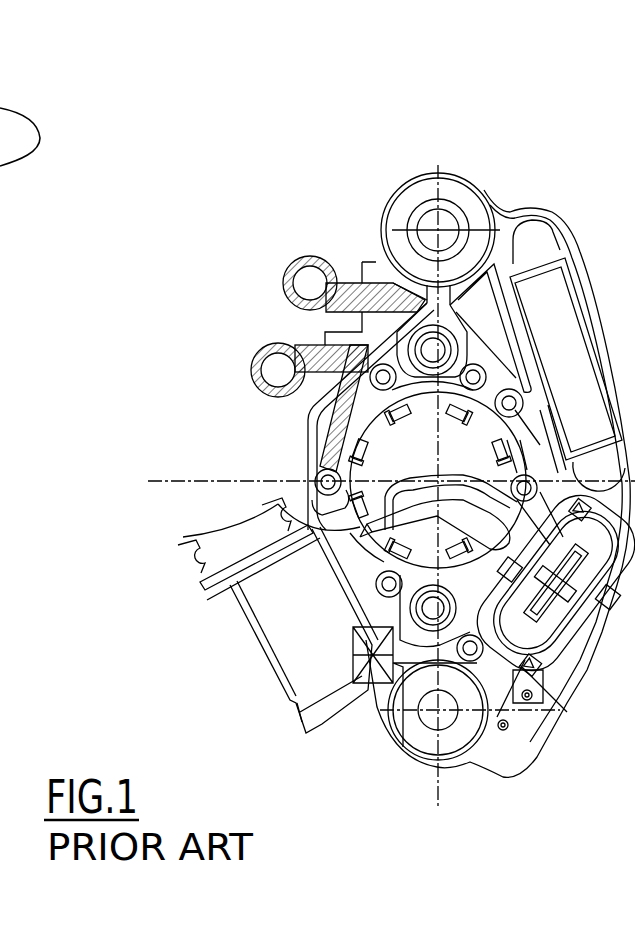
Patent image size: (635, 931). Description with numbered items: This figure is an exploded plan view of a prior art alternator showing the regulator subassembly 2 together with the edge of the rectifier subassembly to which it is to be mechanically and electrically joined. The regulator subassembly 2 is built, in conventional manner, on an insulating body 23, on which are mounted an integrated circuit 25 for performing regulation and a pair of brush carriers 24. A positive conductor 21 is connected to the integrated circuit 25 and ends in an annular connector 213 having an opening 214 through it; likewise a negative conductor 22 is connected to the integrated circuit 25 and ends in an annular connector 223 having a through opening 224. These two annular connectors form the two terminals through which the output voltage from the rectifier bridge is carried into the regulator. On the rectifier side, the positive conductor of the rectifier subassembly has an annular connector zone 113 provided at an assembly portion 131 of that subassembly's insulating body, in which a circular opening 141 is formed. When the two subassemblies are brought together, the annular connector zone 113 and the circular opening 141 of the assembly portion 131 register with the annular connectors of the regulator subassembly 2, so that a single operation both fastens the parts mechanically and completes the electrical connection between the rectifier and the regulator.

The regulator subassembly 2 is at (390, 143).
The positive conductor 21 is at (351, 283).
The annular connector 213 is at (286, 283).
The opening 214 is at (304, 270).
The negative conductor 22 is at (298, 342).
The annular connector 223 is at (252, 372).
The through opening 224 is at (274, 389).
The insulating body 23 is at (372, 262).
The brush carriers 24 is at (304, 652).
The integrated circuit 25 is at (352, 528).
The assembly portion 131 is at (0, 222).
The circular opening 141 is at (0, 292).
The annular connector zone 113 is at (0, 346).